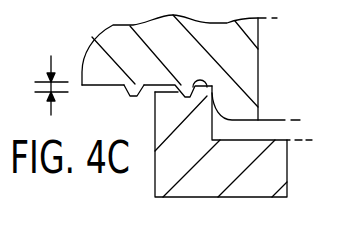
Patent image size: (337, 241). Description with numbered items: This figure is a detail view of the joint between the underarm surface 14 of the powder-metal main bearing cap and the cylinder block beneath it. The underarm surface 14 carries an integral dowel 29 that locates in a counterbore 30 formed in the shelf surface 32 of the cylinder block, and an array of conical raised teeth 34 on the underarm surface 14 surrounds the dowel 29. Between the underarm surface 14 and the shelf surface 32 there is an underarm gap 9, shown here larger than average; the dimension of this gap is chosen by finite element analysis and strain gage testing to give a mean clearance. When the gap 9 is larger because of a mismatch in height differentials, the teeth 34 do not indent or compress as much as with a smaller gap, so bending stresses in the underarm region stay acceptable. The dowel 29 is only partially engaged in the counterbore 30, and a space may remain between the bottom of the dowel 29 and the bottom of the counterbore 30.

The underarm gap 9 is at (45, 81).
The underarm surface 14 is at (97, 85).
The integral dowel 29 is at (248, 107).
The counterbore 30 is at (212, 128).
The shelf surface 32 is at (207, 91).
The conical raised teeth 34 is at (126, 92).